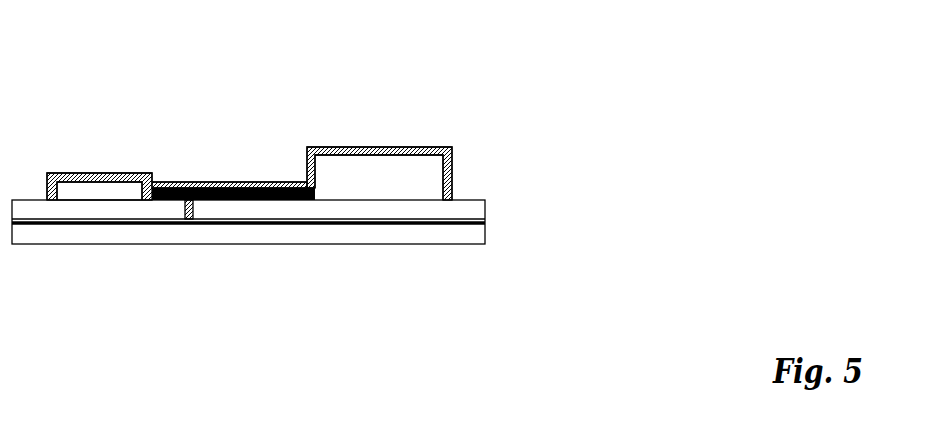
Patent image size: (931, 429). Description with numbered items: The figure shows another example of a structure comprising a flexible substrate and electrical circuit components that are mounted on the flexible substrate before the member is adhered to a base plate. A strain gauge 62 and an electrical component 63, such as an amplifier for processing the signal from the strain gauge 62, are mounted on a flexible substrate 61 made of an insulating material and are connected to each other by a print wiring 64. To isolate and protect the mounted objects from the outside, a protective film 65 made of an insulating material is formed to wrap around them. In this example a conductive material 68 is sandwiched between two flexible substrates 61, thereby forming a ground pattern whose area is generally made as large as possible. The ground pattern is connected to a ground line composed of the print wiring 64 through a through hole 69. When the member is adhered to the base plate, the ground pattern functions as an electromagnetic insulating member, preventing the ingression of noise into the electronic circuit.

The flexible substrate 61 is at (460, 208).
The strain gauge 62 is at (83, 187).
The electrical component 63 is at (390, 173).
The print wiring 64 is at (258, 187).
The protective film 65 is at (370, 148).
The conductive material 68 is at (485, 222).
The through hole 69 is at (193, 206).